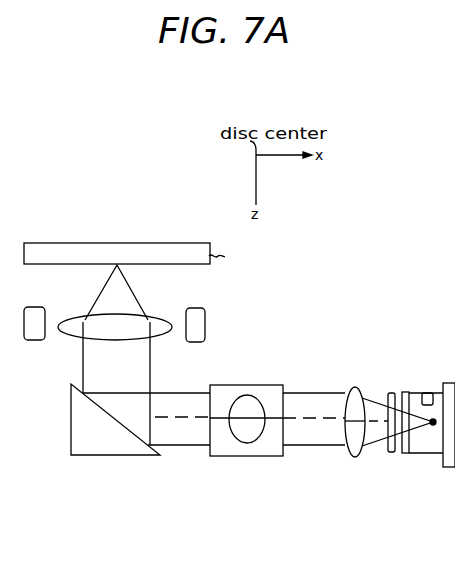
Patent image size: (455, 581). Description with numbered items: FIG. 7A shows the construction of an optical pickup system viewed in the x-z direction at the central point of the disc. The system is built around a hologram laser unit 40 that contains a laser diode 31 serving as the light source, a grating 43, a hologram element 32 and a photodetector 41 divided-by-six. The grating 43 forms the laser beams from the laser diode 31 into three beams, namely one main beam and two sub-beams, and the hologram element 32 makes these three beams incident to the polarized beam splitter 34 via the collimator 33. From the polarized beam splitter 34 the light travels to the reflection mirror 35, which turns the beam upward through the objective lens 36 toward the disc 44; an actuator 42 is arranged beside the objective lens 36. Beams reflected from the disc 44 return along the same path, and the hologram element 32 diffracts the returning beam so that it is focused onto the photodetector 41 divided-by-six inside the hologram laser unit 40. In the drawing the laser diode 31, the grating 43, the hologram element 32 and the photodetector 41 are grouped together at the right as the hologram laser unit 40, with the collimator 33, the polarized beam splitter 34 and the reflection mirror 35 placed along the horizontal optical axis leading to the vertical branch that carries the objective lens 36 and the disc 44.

The laser diode 31 is at (437, 468).
The hologram element 32 is at (392, 393).
The collimator 33 is at (356, 458).
The polarized beam splitter 34 is at (247, 457).
The reflection mirror 35 is at (105, 456).
The objective lens 36 is at (162, 331).
The hologram laser unit 40 is at (423, 435).
The photodetector divided-by-six 41 is at (426, 392).
The actuator 42 is at (205, 322).
The grating 43 is at (405, 455).
The disc 44 is at (165, 242).